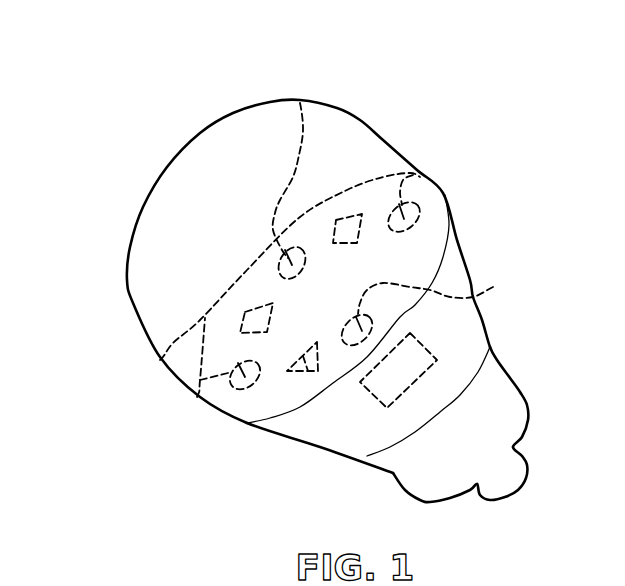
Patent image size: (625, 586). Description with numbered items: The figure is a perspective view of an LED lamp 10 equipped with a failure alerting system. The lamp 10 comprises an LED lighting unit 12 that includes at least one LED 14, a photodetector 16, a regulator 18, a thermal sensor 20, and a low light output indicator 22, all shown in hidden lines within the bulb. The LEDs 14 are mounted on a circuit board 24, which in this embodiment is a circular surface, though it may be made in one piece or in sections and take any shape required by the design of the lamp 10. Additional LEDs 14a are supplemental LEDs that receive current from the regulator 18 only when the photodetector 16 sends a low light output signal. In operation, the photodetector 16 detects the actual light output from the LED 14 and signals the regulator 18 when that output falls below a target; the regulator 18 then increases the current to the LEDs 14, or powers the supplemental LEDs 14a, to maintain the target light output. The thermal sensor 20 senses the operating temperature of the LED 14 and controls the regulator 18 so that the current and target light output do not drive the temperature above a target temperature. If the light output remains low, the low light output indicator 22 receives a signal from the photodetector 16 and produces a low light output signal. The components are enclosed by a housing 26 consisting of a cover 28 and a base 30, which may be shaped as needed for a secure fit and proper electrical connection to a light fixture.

The LED lamp 10 is at (348, 88).
The LED lighting unit 12 is at (441, 194).
The LED 14 is at (413, 173).
The supplemental LEDs 14a is at (300, 103).
The photodetector 16 is at (345, 220).
The regulator 18 is at (387, 383).
The thermal sensor 20 is at (160, 360).
The low light output indicator 22 is at (293, 378).
The circuit board 24 is at (400, 255).
The housing 26 is at (257, 423).
The cover 28 is at (127, 295).
The base 30 is at (483, 319).